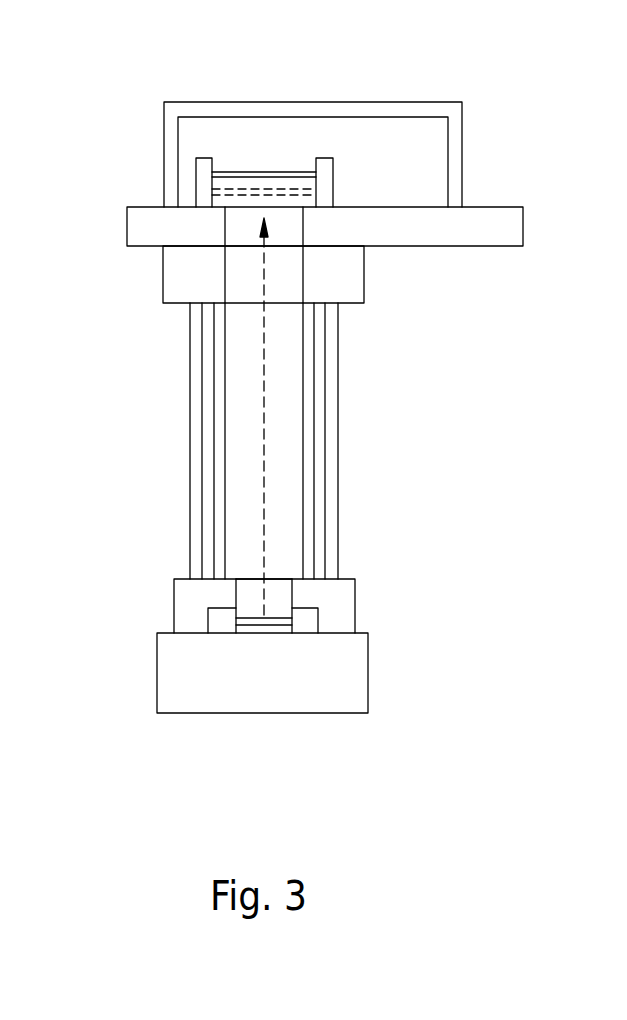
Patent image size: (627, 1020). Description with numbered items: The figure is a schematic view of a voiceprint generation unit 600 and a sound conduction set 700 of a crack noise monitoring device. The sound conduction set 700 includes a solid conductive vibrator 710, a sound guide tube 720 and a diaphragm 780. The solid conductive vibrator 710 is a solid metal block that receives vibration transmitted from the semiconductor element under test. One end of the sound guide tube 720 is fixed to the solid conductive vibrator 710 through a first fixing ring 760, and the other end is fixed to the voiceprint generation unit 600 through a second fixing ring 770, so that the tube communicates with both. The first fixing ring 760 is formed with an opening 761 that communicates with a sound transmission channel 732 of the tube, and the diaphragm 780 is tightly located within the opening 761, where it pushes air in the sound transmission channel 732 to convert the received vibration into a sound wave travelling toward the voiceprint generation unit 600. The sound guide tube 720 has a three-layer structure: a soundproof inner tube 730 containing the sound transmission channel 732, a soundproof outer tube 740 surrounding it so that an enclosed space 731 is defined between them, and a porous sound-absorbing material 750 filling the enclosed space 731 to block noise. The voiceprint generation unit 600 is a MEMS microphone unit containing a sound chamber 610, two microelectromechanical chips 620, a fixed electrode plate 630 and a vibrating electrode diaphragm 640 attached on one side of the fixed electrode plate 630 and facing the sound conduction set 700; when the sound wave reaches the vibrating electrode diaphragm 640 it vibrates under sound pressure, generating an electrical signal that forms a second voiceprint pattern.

The voiceprint generation unit 600 is at (475, 97).
The sound chamber 610 is at (203, 135).
The microelectromechanical chips 620 is at (203, 185).
The fixed electrode plate 630 is at (262, 172).
The vibrating electrode diaphragm 640 is at (230, 195).
The sound conduction set 700 is at (525, 253).
The solid conductive vibrator 710 is at (355, 673).
The sound guide tube 720 is at (447, 395).
The soundproof inner tube 730 is at (307, 419).
The enclosed space 731 is at (202, 400).
The sound transmission channel 732 is at (225, 343).
The soundproof outer tube 740 is at (335, 476).
The porous sound-absorbing material 750 is at (322, 447).
The first fixing ring 760 is at (343, 610).
The opening 761 is at (252, 585).
The second fixing ring 770 is at (348, 282).
The diaphragm 780 is at (268, 623).